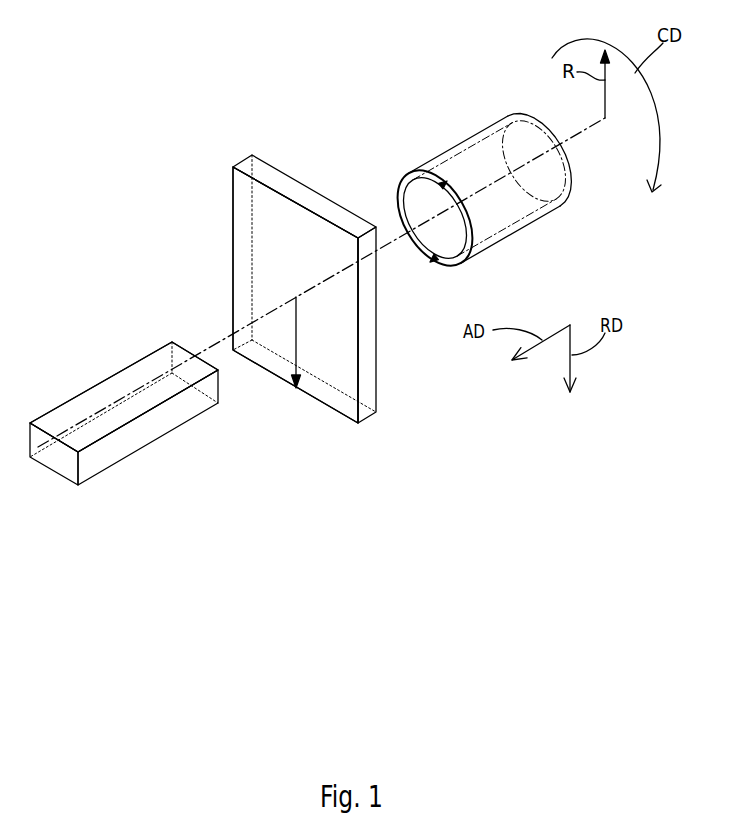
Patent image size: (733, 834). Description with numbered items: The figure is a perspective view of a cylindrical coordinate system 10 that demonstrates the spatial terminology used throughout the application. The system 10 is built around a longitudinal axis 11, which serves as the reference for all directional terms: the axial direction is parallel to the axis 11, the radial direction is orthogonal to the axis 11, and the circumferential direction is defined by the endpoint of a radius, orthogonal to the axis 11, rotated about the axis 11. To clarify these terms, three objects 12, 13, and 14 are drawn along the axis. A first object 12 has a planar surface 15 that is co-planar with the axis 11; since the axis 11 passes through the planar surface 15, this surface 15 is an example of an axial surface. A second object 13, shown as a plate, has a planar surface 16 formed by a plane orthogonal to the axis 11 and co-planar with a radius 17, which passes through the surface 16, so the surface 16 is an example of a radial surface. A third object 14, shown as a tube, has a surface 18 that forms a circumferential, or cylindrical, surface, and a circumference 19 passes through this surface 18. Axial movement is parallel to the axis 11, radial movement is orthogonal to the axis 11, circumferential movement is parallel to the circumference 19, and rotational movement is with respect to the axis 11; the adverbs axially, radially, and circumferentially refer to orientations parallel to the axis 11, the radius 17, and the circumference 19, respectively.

The cylindrical coordinate system 10 is at (186, 187).
The longitudinal axis 11 is at (553, 144).
The object 12 is at (124, 436).
The object 13 is at (303, 306).
The object 14 is at (453, 198).
The axial surface 15 is at (95, 398).
The radial surface 16 is at (245, 257).
The radius 17 is at (299, 337).
The circumferential surface 18 is at (458, 145).
The circumference 19 is at (395, 190).